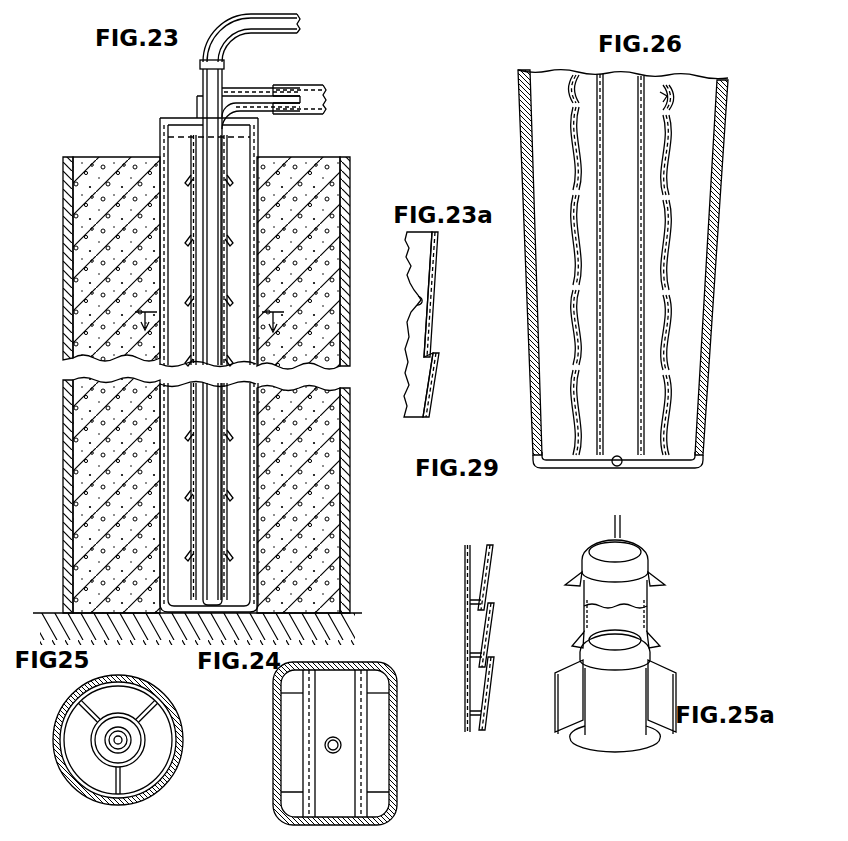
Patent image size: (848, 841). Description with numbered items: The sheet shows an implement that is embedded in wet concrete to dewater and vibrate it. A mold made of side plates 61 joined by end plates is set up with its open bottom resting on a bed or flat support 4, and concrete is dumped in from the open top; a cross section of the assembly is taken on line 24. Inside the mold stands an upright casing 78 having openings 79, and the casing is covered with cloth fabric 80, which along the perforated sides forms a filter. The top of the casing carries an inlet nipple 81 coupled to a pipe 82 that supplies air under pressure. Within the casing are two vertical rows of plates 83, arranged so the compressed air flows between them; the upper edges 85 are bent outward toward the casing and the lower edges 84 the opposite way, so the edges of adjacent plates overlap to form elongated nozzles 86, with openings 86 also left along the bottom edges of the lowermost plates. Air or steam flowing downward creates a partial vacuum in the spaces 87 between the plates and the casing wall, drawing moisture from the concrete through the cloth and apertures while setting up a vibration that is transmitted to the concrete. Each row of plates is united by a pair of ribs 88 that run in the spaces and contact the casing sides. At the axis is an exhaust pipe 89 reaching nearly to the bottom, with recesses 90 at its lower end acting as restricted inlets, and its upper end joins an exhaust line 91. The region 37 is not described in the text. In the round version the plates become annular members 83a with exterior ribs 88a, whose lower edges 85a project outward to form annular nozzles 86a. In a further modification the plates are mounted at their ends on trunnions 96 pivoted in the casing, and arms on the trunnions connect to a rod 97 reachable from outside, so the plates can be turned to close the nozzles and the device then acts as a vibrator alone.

In FIG. 23, the bed or flat support 4 is at (350, 613).
In FIG. 23, the section line 24 is at (216, 332).
In FIG. 23, the fill material 37 is at (177, 396).
In FIG. 23, the side plates 61 is at (64, 456).
In FIG. 23, the casing 78 is at (258, 146).
In FIG. 26, the casing 78 is at (702, 93).
In FIG. 25, the casing 78 is at (78, 786).
In FIG. 24, the casing 78 is at (283, 727).
In FIG. 23, the openings 79 is at (157, 192).
In FIG. 26, the openings 79 is at (530, 108).
In FIG. 24, the openings 79 is at (394, 712).
In FIG. 23, the cloth fabric 80 is at (259, 253).
In FIG. 26, the cloth fabric 80 is at (538, 332).
In FIG. 25, the cloth fabric 80 is at (56, 740).
In FIG. 24, the cloth fabric 80 is at (390, 670).
In FIG. 23, the inlet nipple 81 is at (240, 88).
In FIG. 23, the pipe 82 is at (306, 85).
In FIG. 23, the plates 83 is at (188, 273).
In FIG. 23A, the plates 83 is at (436, 248).
In FIG. 29, the plates 83 is at (492, 550).
In FIG. 26, the plates 83 is at (672, 165).
In FIG. 24, the plates 83 is at (362, 770).
In FIG. 25, the annular members 83a is at (150, 703).
In FIG. 25A, the annular members 83a is at (605, 710).
In FIG. 23, the lower edges 84 is at (188, 172).
In FIG. 23A, the lower edges 84 is at (418, 299).
In FIG. 26, the lower edges 84 is at (668, 95).
In FIG. 25, the lower edges 84 is at (96, 738).
In FIG. 24, the lower edges 84 is at (342, 746).
In FIG. 25A, the lower edges 84 is at (645, 555).
In FIG. 23, the upper edges 85 is at (228, 180).
In FIG. 23A, the upper edges 85 is at (437, 297).
In FIG. 29, the upper edges 85 is at (484, 600).
In FIG. 26, the upper edges 85 is at (668, 113).
In FIG. 24, the upper edges 85 is at (308, 765).
In FIG. 25, the lower edges 85a is at (150, 773).
In FIG. 25A, the lower edges 85a is at (615, 752).
In FIG. 23, the elongated nozzles 86 is at (228, 425).
In FIG. 25A, the annular nozzles 86a is at (580, 646).
In FIG. 26, the spaces 87 is at (557, 163).
In FIG. 24, the spaces 87 is at (293, 716).
In FIG. 23A, the ribs 88 is at (413, 368).
In FIG. 26, the ribs 88 is at (682, 320).
In FIG. 24, the ribs 88 is at (290, 690).
In FIG. 25, the exterior ribs 88a is at (85, 708).
In FIG. 25A, the exterior ribs 88a is at (662, 667).
In FIG. 23, the exhaust pipe 89 is at (203, 571).
In FIG. 26, the exhaust pipe 89 is at (645, 281).
In FIG. 25, the exhaust pipe 89 is at (120, 733).
In FIG. 24, the exhaust pipe 89 is at (326, 750).
In FIG. 26, the recesses 90 is at (604, 459).
In FIG. 23, the exhaust line 91 is at (299, 22).
In FIG. 29, the trunnions 96 is at (488, 632).
In FIG. 29, the rod 97 is at (465, 622).